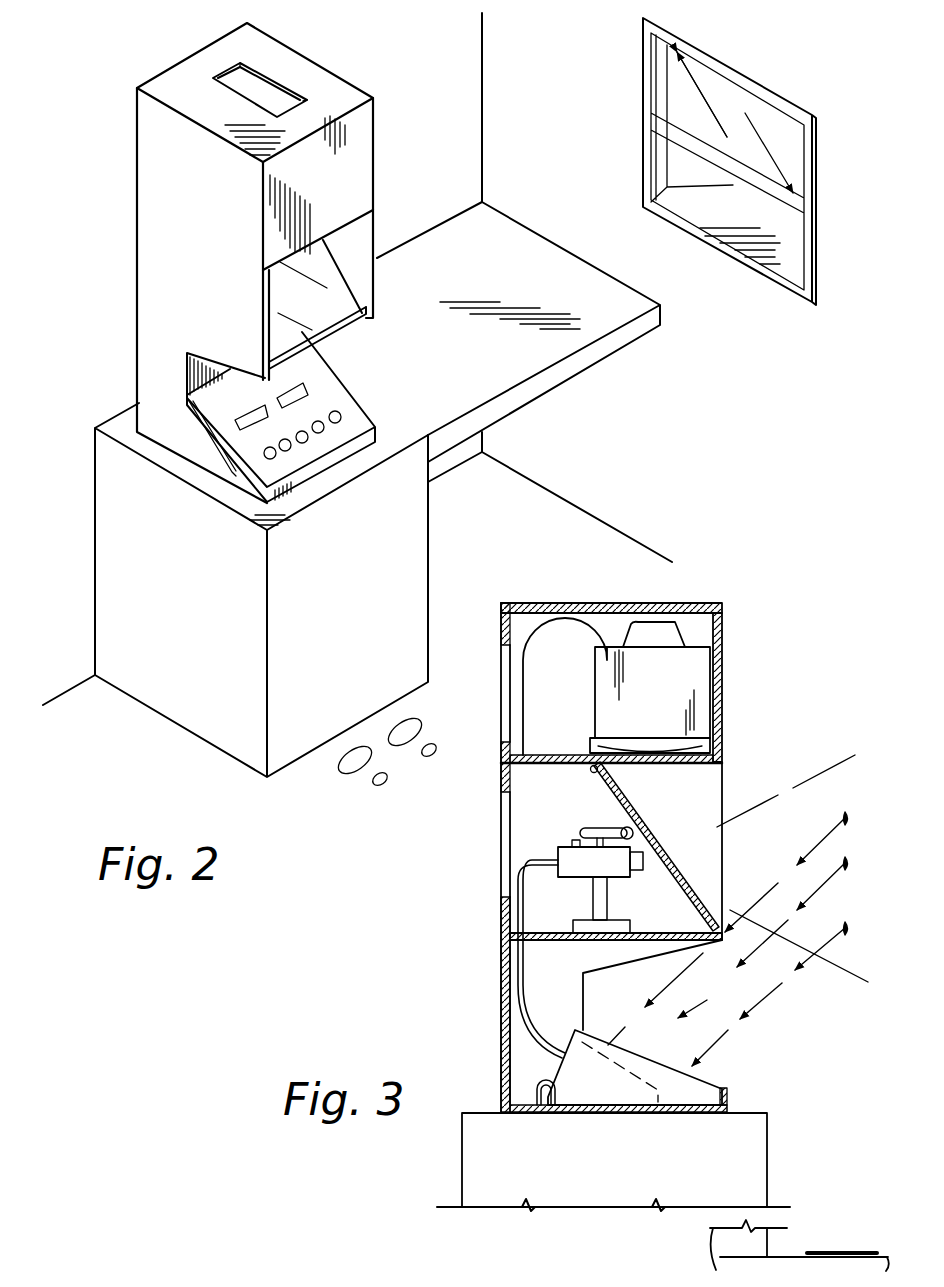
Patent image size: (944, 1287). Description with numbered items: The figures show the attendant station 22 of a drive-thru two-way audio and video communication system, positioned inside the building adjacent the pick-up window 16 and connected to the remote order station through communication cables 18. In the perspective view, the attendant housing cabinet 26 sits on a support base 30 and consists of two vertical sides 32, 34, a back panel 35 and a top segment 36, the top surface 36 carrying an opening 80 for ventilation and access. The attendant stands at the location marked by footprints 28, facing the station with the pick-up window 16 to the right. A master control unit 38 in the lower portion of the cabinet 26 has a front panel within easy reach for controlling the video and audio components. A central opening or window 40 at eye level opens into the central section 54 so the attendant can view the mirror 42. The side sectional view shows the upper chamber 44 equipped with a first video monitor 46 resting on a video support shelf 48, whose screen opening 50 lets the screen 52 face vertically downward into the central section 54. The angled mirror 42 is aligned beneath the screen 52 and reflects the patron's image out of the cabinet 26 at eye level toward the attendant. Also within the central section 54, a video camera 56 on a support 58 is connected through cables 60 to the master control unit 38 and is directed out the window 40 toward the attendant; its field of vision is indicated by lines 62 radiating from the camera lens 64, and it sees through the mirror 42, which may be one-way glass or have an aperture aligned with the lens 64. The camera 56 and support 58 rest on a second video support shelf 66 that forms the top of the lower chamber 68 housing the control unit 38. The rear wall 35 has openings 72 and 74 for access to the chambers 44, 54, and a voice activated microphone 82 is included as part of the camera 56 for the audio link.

In FIG. 2, the pick-up window 16 is at (695, 97).
In FIG. 3, the communication cables 18 is at (540, 1078).
In FIG. 2, the attendant station 22 is at (263, 263).
In FIG. 2, the attendant housing cabinet 26 is at (263, 263).
In FIG. 3, the attendant housing cabinet 26 is at (609, 847).
In FIG. 2, the footprints 28 is at (390, 750).
In FIG. 3, the footprints 28 is at (839, 1250).
In FIG. 2, the support base 30 is at (123, 588).
In FIG. 2, the vertical side 32 is at (160, 163).
In FIG. 2, the vertical side 34 is at (378, 136).
In FIG. 3, the back panel 35 is at (502, 966).
In FIG. 2, the top segment 36 is at (318, 77).
In FIG. 3, the top segment 36 is at (700, 603).
In FIG. 2, the master control unit 38 is at (315, 403).
In FIG. 3, the master control unit 38 is at (702, 1088).
In FIG. 2, the central opening or window 40 is at (345, 238).
In FIG. 3, the central opening or window 40 is at (705, 843).
In FIG. 2, the mirror 42 is at (332, 296).
In FIG. 3, the mirror 42 is at (601, 783).
In FIG. 3, the upper portion or chamber 44 is at (693, 631).
In FIG. 3, the video monitor 46 is at (686, 709).
In FIG. 3, the video support shelf 48 is at (555, 753).
In FIG. 3, the screen opening 50 is at (681, 769).
In FIG. 3, the screen 52 is at (651, 751).
In FIG. 3, the central section 54 is at (704, 803).
In FIG. 3, the video camera 56 is at (608, 866).
In FIG. 3, the support 58 is at (594, 898).
In FIG. 3, the cables 60 is at (516, 861).
In FIG. 3, the lines 62 is at (820, 775).
In FIG. 3, the camera lens 64 is at (643, 860).
In FIG. 3, the video support shelf 66 is at (548, 940).
In FIG. 3, the lower chamber 68 is at (548, 988).
In FIG. 3, the opening 72 is at (500, 813).
In FIG. 3, the opening 74 is at (505, 676).
In FIG. 2, the opening 80 is at (232, 78).
In FIG. 3, the opening 80 is at (632, 603).
In FIG. 3, the voice activated microphone 82 is at (604, 828).